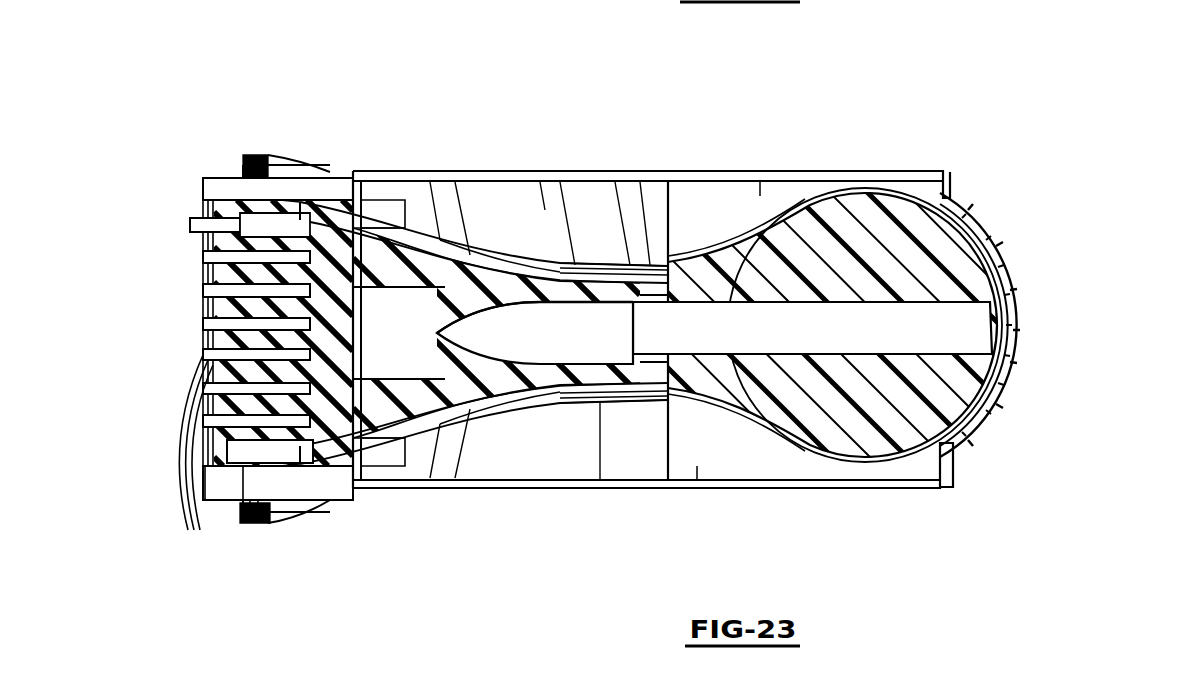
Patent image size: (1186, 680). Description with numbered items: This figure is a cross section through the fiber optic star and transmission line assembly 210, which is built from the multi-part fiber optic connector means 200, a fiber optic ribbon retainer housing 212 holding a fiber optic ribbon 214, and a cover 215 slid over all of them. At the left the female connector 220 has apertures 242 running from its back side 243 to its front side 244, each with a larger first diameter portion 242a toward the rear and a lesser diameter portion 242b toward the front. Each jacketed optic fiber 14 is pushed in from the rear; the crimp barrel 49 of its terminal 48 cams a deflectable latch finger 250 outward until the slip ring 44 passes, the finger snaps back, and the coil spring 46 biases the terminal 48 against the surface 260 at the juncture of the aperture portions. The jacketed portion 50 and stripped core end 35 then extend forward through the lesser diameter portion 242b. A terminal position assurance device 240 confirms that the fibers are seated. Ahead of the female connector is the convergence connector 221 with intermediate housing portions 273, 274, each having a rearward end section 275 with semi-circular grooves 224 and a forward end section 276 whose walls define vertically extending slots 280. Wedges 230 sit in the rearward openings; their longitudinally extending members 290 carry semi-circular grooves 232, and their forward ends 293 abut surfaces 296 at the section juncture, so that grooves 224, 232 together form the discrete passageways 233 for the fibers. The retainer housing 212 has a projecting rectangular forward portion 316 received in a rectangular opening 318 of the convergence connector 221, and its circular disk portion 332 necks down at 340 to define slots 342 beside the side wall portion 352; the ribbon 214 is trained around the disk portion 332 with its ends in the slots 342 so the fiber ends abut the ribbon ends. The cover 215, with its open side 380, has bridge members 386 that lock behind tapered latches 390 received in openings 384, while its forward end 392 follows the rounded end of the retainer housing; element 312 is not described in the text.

The jacketed input and output optic fibers 14 is at (192, 218).
The stripped core end 35 is at (627, 165).
The slip ring 44 is at (223, 160).
The coil spring 46 is at (226, 160).
The terminal 48 is at (286, 160).
The crimp barrel 49 is at (308, 160).
The jacketed portion 50 is at (405, 176).
The fiber optic connector means 200 is at (545, 117).
The fiber optic star and transmission line assembly 210 is at (810, 110).
The fiber optic ribbon retainer housing 212 is at (905, 195).
The fiber optic ribbon 214 is at (840, 195).
The cover 215 is at (697, 172).
The female connector 220 is at (370, 160).
The convergence connector 221 is at (567, 165).
The semi-circular grooves 224 is at (460, 235).
The wedges 230 is at (490, 165).
The semi-circular grooves 232 is at (537, 170).
The discrete passageways 233 is at (470, 320).
The terminal position assurance device 240 is at (227, 513).
The apertures 242 is at (365, 258).
The first diameter portion 242a is at (303, 160).
The lesser diameter portion 242b is at (383, 160).
The back side 243 is at (368, 297).
The front side 244 is at (337, 482).
The deflectable latch fingers 250 is at (201, 457).
The surface 260 is at (336, 166).
The intermediate housing portion 273 is at (655, 168).
The intermediate housing portion 274 is at (601, 490).
The rearward end section 275 is at (464, 170).
The forward end section 276 is at (647, 257).
The vertically extending slots 280 is at (663, 262).
The longitudinally extending members 290 is at (440, 170).
The forward ends 293 is at (597, 168).
The surfaces 296 is at (565, 303).
The rear pins 312 is at (263, 514).
The projecting rectangular forward portion 316 is at (650, 295).
The rectangular opening 318 is at (660, 357).
The circular disk portion 332 is at (950, 452).
The neck down portion 340 is at (707, 373).
The slots 342 is at (700, 297).
The lower side wall portion 352 is at (760, 196).
The open side 380 is at (223, 513).
The openings 384 is at (320, 157).
The catch or bridge 386 is at (250, 160).
The tapered latches 390 is at (262, 158).
The forward end 392 is at (996, 243).